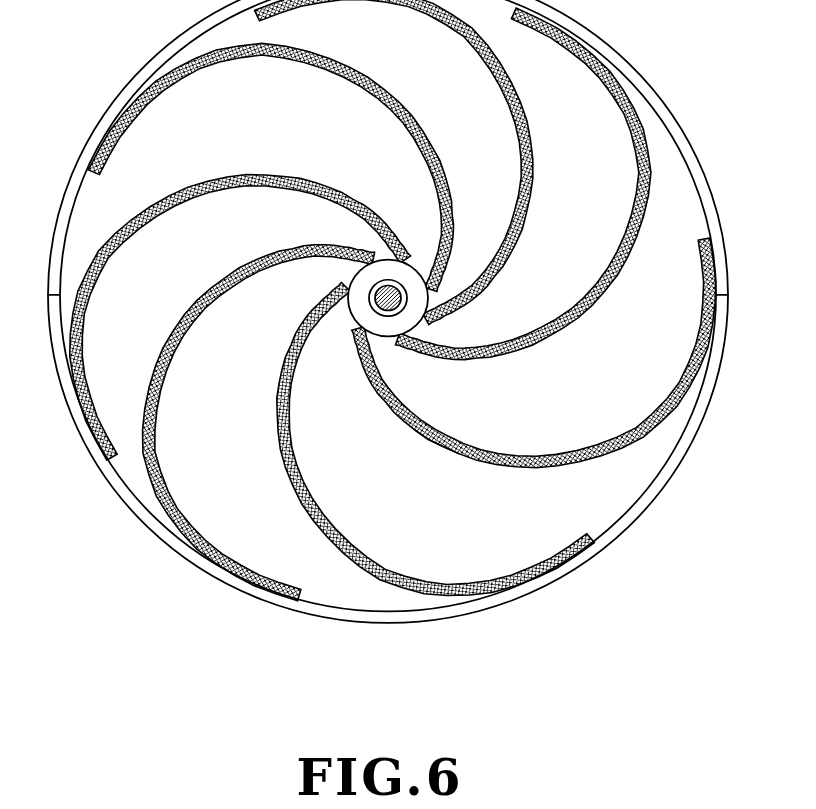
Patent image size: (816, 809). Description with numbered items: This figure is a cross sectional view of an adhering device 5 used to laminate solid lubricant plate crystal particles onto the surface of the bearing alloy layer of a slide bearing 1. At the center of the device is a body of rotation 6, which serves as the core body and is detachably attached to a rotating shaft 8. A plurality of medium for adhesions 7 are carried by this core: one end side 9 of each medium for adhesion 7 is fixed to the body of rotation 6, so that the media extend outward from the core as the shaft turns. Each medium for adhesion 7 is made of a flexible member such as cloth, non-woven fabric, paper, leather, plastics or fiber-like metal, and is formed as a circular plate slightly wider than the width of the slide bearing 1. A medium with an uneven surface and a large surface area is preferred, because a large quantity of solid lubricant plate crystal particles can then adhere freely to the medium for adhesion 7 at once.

The slide bearing 1 is at (678, 118).
The adhering device 5 is at (372, 592).
The body of rotation 6 is at (352, 307).
The medium for adhesion 7 is at (617, 447).
The rotating shaft 8 is at (399, 278).
The one end side 9 is at (362, 340).